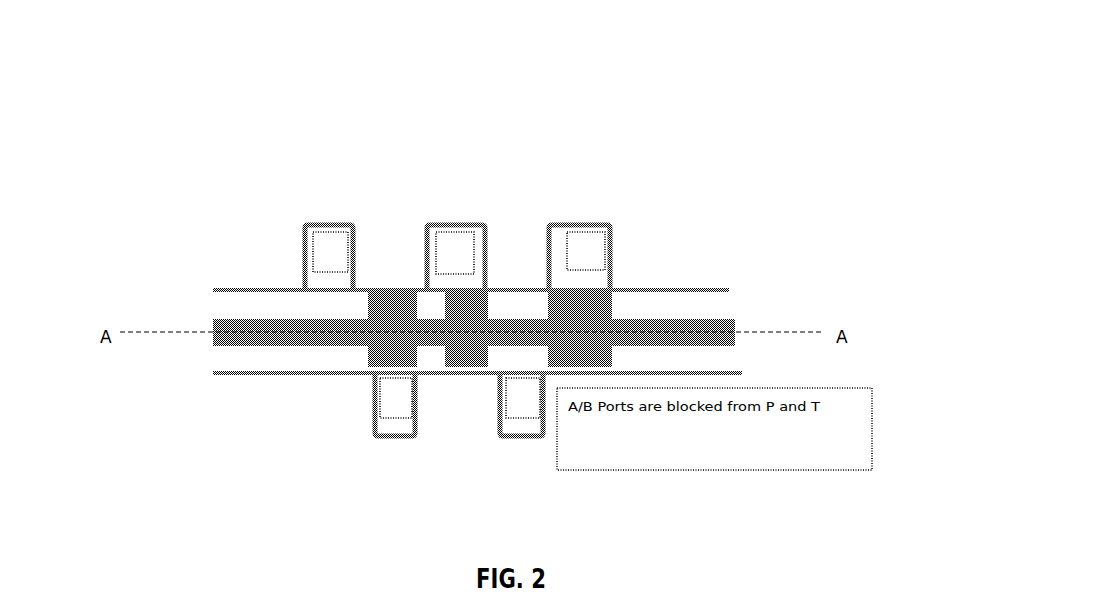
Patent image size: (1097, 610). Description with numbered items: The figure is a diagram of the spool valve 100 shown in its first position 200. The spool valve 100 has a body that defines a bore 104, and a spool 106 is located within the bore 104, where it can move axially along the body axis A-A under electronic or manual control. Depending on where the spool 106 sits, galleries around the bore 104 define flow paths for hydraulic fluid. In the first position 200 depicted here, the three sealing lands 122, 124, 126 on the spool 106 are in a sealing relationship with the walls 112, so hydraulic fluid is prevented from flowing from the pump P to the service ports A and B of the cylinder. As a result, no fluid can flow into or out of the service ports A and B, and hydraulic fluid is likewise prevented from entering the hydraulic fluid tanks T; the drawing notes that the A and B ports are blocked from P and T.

The spool valve 100 is at (122, 104).
The bore 104 is at (675, 305).
The spool 106 is at (720, 325).
The walls 112 is at (238, 288).
The sealing land 122 is at (382, 304).
The sealing land 124 is at (473, 303).
The sealing land 126 is at (593, 307).
The first position 200 is at (216, 342).